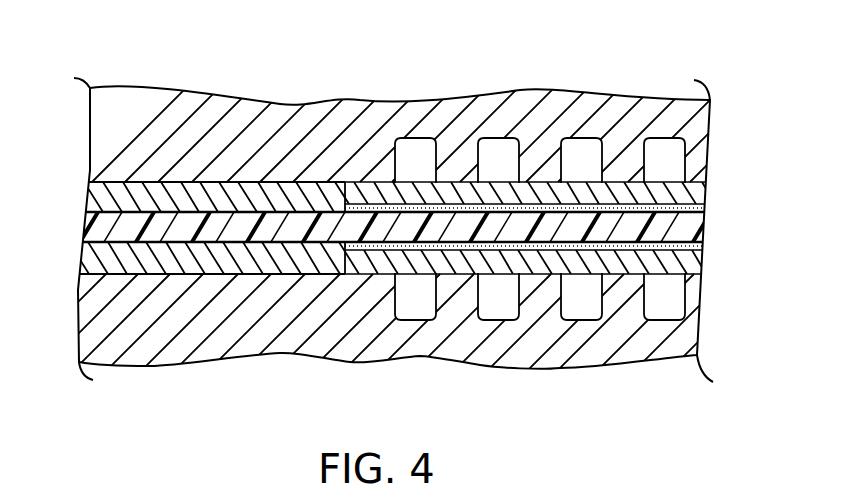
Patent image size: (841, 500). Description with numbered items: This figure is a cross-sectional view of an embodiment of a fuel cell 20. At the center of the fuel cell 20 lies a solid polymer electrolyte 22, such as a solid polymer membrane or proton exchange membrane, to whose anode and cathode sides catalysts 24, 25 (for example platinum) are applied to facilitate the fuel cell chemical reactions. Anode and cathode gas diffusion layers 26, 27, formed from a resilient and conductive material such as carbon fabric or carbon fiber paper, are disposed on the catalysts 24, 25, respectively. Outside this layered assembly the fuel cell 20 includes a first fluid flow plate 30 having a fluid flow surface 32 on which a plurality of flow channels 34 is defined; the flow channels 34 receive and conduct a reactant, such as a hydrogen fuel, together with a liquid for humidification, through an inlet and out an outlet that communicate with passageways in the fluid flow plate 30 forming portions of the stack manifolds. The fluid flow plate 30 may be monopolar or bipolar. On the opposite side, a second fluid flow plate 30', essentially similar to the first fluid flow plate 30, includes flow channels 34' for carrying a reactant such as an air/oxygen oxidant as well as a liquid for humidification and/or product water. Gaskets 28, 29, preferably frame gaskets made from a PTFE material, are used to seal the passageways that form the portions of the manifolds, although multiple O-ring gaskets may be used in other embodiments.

The fuel cell 20 is at (52, 100).
The first fluid flow plate 30 is at (459, 105).
The second fluid flow plate 30' is at (383, 362).
The flow channels 34 is at (540, 105).
The flow channels 34' is at (540, 356).
The gasket 28 is at (106, 201).
The gasket 29 is at (106, 262).
The anode gas diffusion layer 26 is at (702, 192).
The cathode gas diffusion layer 27 is at (697, 264).
The catalyst 24 is at (700, 210).
The catalyst 25 is at (700, 248).
The solid polymer electrolyte 22 is at (700, 232).
The fluid flow surface 32 is at (383, 184).